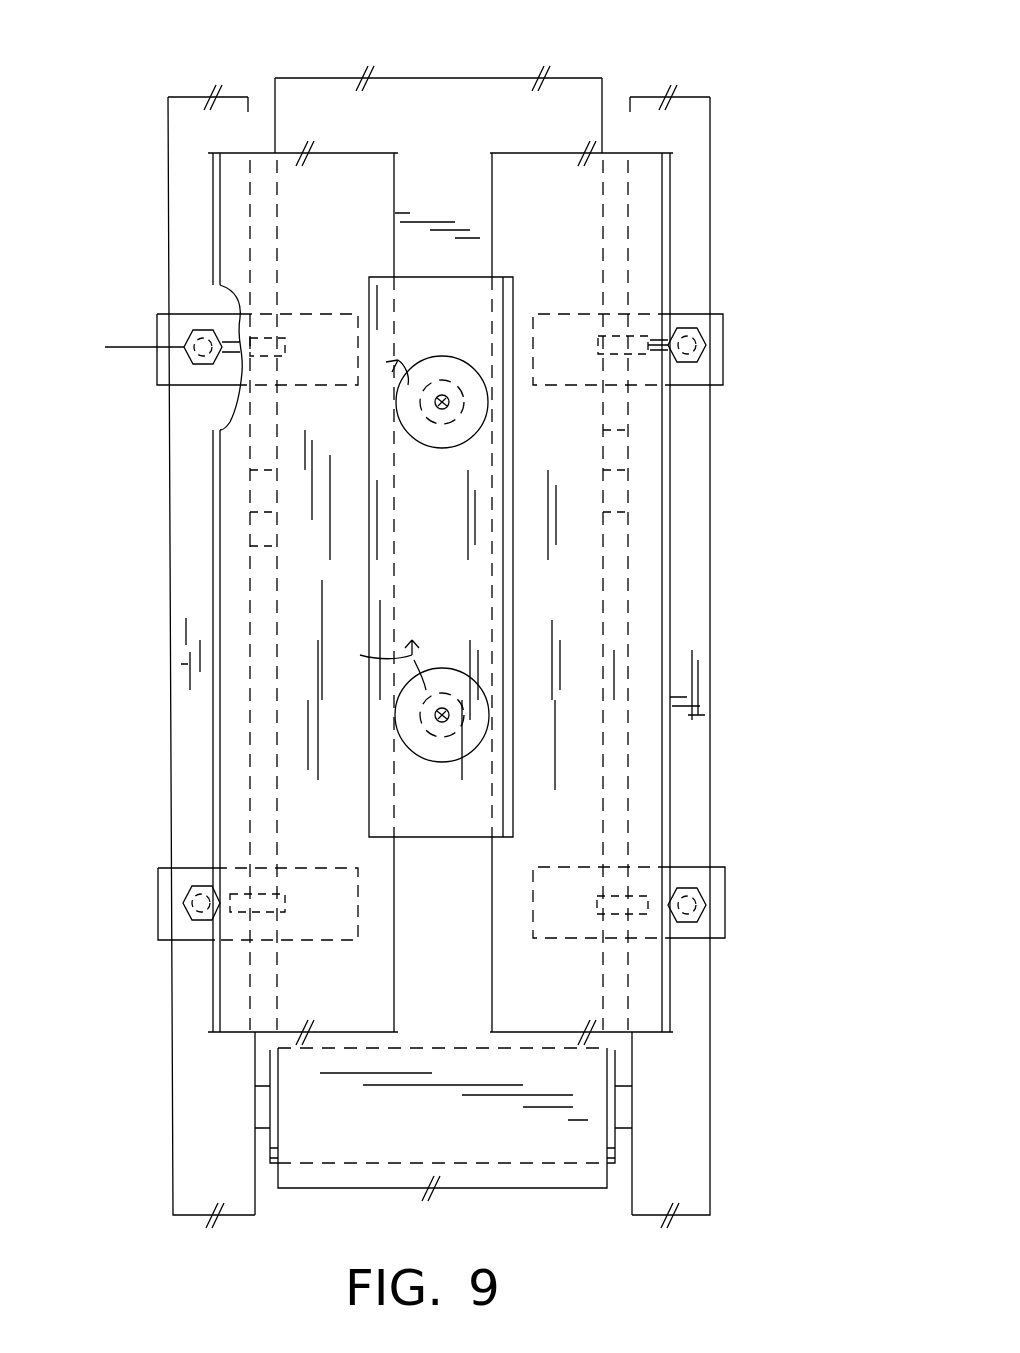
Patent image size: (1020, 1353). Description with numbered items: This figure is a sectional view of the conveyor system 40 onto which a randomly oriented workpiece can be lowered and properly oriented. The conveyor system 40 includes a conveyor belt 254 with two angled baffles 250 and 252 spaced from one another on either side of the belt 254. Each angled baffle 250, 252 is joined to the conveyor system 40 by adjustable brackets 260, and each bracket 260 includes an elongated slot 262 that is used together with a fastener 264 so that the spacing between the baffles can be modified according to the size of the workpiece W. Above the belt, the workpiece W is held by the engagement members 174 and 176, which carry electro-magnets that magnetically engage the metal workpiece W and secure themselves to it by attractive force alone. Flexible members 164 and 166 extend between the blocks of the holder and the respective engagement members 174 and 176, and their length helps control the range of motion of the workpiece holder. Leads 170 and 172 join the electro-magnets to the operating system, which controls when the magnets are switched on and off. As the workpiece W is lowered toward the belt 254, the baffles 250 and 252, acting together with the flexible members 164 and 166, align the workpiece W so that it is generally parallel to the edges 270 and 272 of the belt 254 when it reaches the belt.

The conveyor system 40 is at (795, 132).
The workpiece W is at (507, 801).
The flexible member 164 is at (444, 712).
The flexible member 166 is at (445, 425).
The lead 170 is at (372, 652).
The lead 172 is at (398, 360).
The engagement member 174 is at (432, 763).
The engagement member 176 is at (452, 357).
The angled baffle 250 is at (230, 233).
The angled baffle 252 is at (648, 236).
The conveyor belt 254 is at (572, 97).
The adjustable bracket 260 is at (165, 372).
The elongated slot 262 is at (237, 353).
The fastener 264 is at (188, 347).
The edge of belt 270 is at (605, 648).
The edge of belt 272 is at (246, 624).